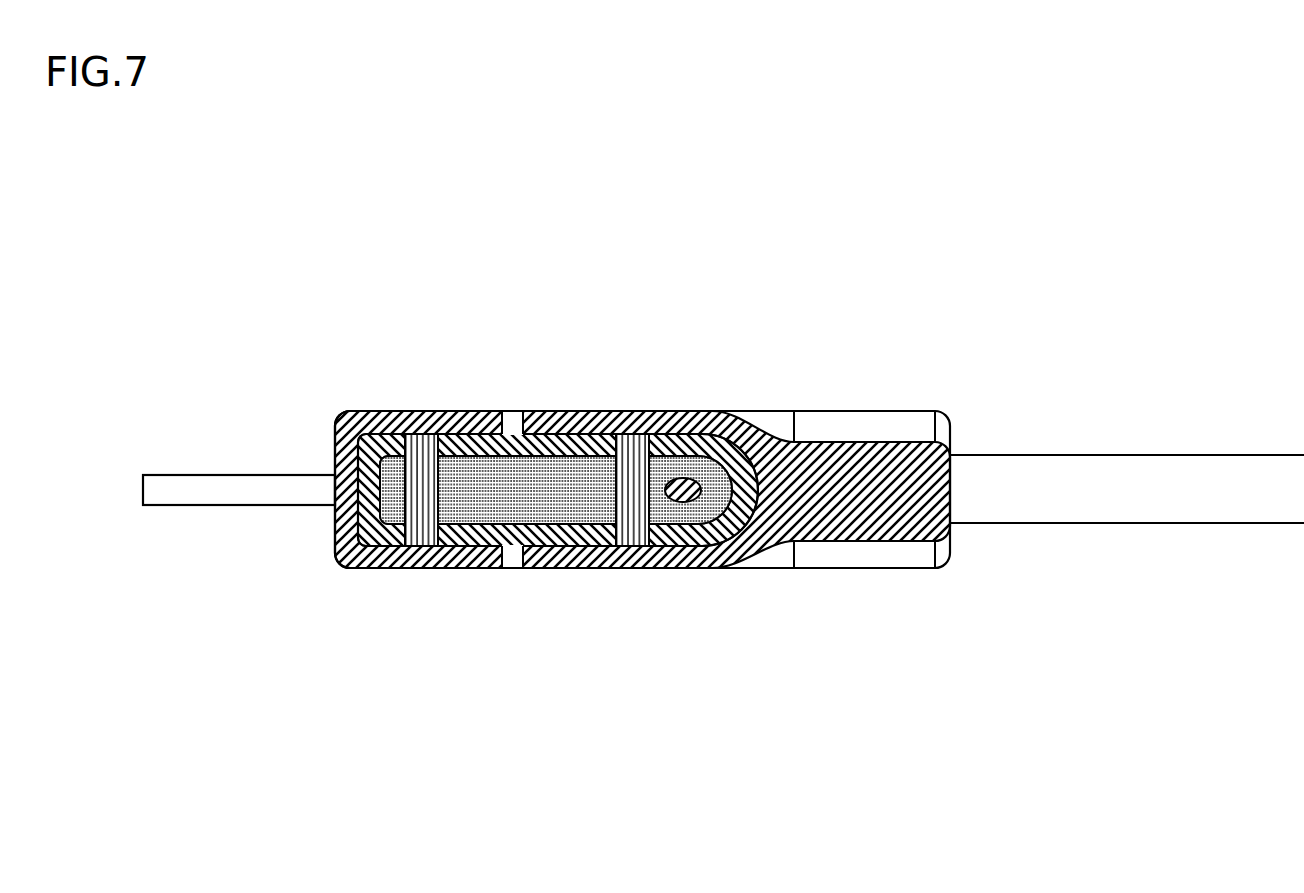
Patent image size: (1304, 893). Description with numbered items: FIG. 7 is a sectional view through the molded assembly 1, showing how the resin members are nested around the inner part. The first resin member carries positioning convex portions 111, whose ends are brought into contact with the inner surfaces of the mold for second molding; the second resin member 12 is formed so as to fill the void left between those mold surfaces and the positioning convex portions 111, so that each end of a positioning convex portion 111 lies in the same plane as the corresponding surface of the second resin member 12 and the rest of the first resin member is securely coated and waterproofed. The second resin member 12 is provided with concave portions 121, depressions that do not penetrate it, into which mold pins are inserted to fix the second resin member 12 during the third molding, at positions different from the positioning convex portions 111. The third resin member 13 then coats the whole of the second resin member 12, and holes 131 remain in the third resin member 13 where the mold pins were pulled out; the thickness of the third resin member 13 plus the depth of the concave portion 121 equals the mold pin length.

The sensor device 1 is at (697, 220).
The second resin member 12 is at (357, 412).
The third resin member 13 is at (670, 413).
The positioning convex portions 111 is at (417, 413).
The holes 131 is at (505, 413).
The concave portions 121 is at (520, 413).